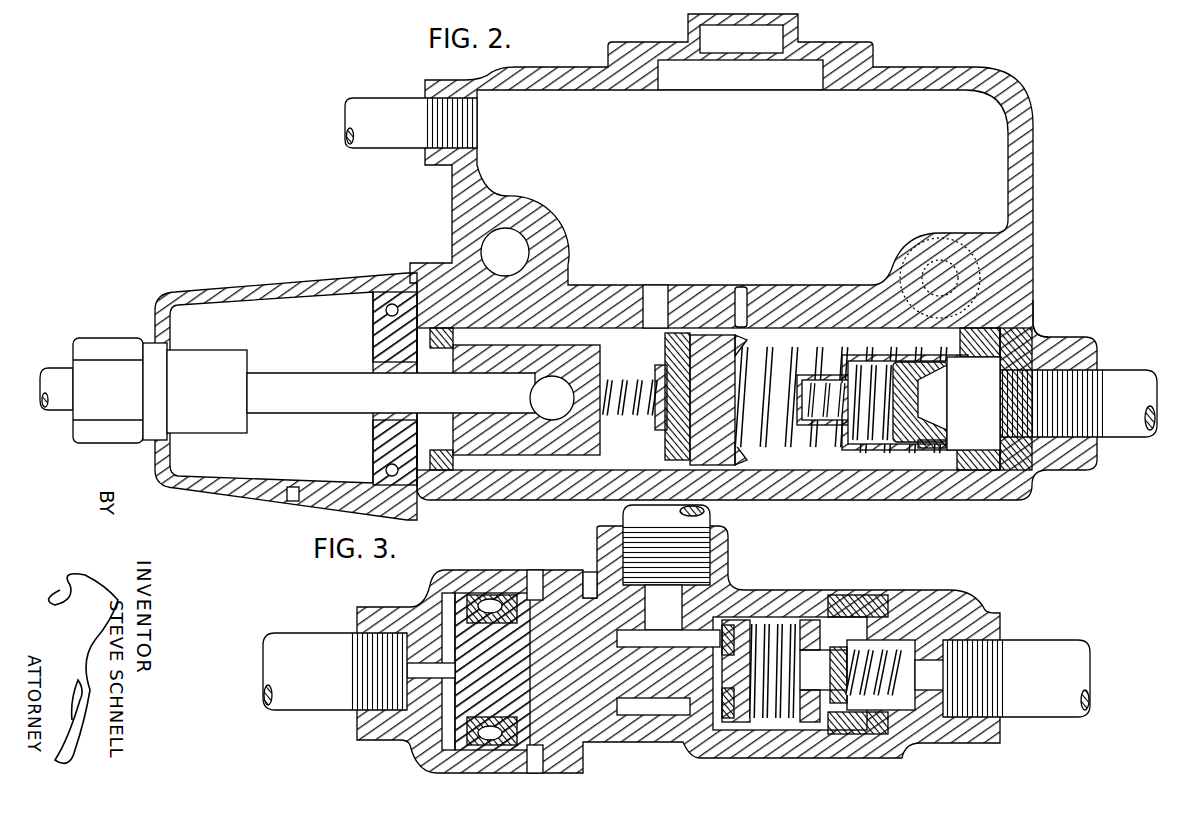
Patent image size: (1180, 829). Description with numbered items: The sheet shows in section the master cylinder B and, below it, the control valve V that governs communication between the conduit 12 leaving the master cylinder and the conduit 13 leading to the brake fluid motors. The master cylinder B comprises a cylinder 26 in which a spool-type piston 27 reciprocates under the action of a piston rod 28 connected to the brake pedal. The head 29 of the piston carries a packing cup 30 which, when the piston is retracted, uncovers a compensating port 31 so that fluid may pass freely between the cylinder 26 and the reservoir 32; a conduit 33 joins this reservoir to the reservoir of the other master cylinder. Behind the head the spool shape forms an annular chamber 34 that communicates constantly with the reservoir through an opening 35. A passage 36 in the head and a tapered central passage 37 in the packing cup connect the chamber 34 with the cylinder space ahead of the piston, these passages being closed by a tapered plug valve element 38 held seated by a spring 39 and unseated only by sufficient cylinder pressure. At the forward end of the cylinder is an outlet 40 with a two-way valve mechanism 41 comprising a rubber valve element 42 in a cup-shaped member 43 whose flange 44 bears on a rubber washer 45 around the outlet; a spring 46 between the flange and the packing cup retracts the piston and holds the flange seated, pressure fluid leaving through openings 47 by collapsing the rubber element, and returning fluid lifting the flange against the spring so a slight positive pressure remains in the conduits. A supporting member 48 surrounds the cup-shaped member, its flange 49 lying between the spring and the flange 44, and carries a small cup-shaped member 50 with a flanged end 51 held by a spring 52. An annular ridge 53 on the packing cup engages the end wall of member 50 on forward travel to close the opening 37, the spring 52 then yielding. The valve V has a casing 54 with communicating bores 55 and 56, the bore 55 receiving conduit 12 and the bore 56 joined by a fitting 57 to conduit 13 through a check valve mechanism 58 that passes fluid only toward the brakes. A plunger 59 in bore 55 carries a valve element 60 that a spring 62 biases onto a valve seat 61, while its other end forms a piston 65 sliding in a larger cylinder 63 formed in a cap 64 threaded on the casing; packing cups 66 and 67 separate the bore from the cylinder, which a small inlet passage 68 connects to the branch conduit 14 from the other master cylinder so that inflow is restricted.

In FIG. 2, the conduit 12 is at (1112, 385).
In FIG. 3, the conduit 12 is at (666, 544).
In FIG. 3, the conduit 13 is at (1016, 678).
In FIG. 3, the branch conduit 14 is at (335, 671).
In FIG. 2, the cylinder 26 is at (813, 298).
In FIG. 2, the piston 27 is at (545, 340).
In FIG. 2, the piston rod 28 is at (287, 390).
In FIG. 2, the head 29 is at (560, 325).
In FIG. 2, the packing cup 30 is at (703, 318).
In FIG. 2, the compensating port 31 is at (743, 290).
In FIG. 2, the reservoir 32 is at (897, 100).
In FIG. 2, the conduit 33 is at (411, 123).
In FIG. 2, the annular chamber 34 is at (570, 350).
In FIG. 2, the opening 35 is at (655, 288).
In FIG. 2, the passage 36 is at (622, 413).
In FIG. 2, the central passage 37 is at (738, 362).
In FIG. 2, the valve element 38 is at (727, 405).
In FIG. 2, the spring 39 is at (592, 395).
In FIG. 2, the outlet 40 is at (1012, 365).
In FIG. 2, the two-way valve mechanism 41 is at (945, 402).
In FIG. 2, the rubber valve element 42 is at (912, 420).
In FIG. 2, the cup-shaped member 43 is at (949, 455).
In FIG. 2, the flange 44 is at (1002, 467).
In FIG. 2, the rubber washer 45 is at (1028, 300).
In FIG. 2, the spring 46 is at (830, 354).
In FIG. 2, the openings 47 is at (932, 447).
In FIG. 2, the supporting member 48 is at (877, 452).
In FIG. 2, the flange 49 is at (963, 335).
In FIG. 2, the cup-shaped member 50 is at (841, 399).
In FIG. 2, the flanged end 51 is at (852, 434).
In FIG. 2, the spring 52 is at (860, 403).
In FIG. 2, the annular ridge 53 is at (690, 397).
In FIG. 3, the casing 54 is at (735, 590).
In FIG. 3, the bore 55 is at (663, 708).
In FIG. 3, the bore 56 is at (772, 727).
In FIG. 3, the fitting 57 is at (896, 620).
In FIG. 3, the check valve mechanism 58 is at (842, 702).
In FIG. 3, the plunger 59 is at (642, 657).
In FIG. 3, the valve element 60 is at (743, 727).
In FIG. 3, the valve seat 61 is at (715, 636).
In FIG. 3, the spring 62 is at (782, 618).
In FIG. 3, the cylinder 63 is at (452, 607).
In FIG. 3, the cap 64 is at (520, 575).
In FIG. 3, the piston 65 is at (488, 682).
In FIG. 3, the packing cup 66 is at (502, 593).
In FIG. 3, the packing cup 67 is at (563, 572).
In FIG. 3, the inlet passage 68 is at (418, 665).
In FIG. 2, the master cylinder B is at (598, 278).
In FIG. 3, the control valve V is at (676, 642).